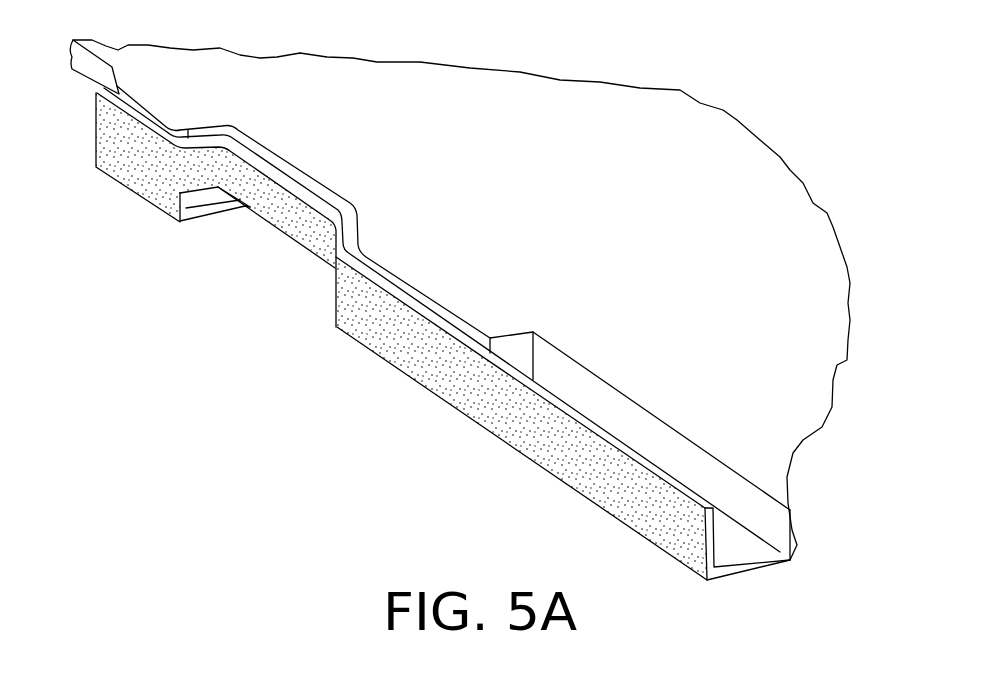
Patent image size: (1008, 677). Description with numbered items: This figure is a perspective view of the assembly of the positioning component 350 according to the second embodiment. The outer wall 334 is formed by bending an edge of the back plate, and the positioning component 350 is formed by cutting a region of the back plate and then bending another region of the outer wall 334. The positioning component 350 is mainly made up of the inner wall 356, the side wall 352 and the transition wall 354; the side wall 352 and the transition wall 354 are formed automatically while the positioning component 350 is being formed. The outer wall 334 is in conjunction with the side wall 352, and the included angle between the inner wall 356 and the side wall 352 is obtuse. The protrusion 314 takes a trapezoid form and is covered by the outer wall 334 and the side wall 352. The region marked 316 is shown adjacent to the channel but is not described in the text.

The outer wall 334 is at (117, 157).
The positioning component 350 is at (226, 273).
The side wall 352 is at (190, 208).
The transition wall 354 is at (221, 190).
The inner wall 356 is at (256, 243).
The receiving channel 316 is at (309, 285).
The protrusion 314 is at (440, 297).